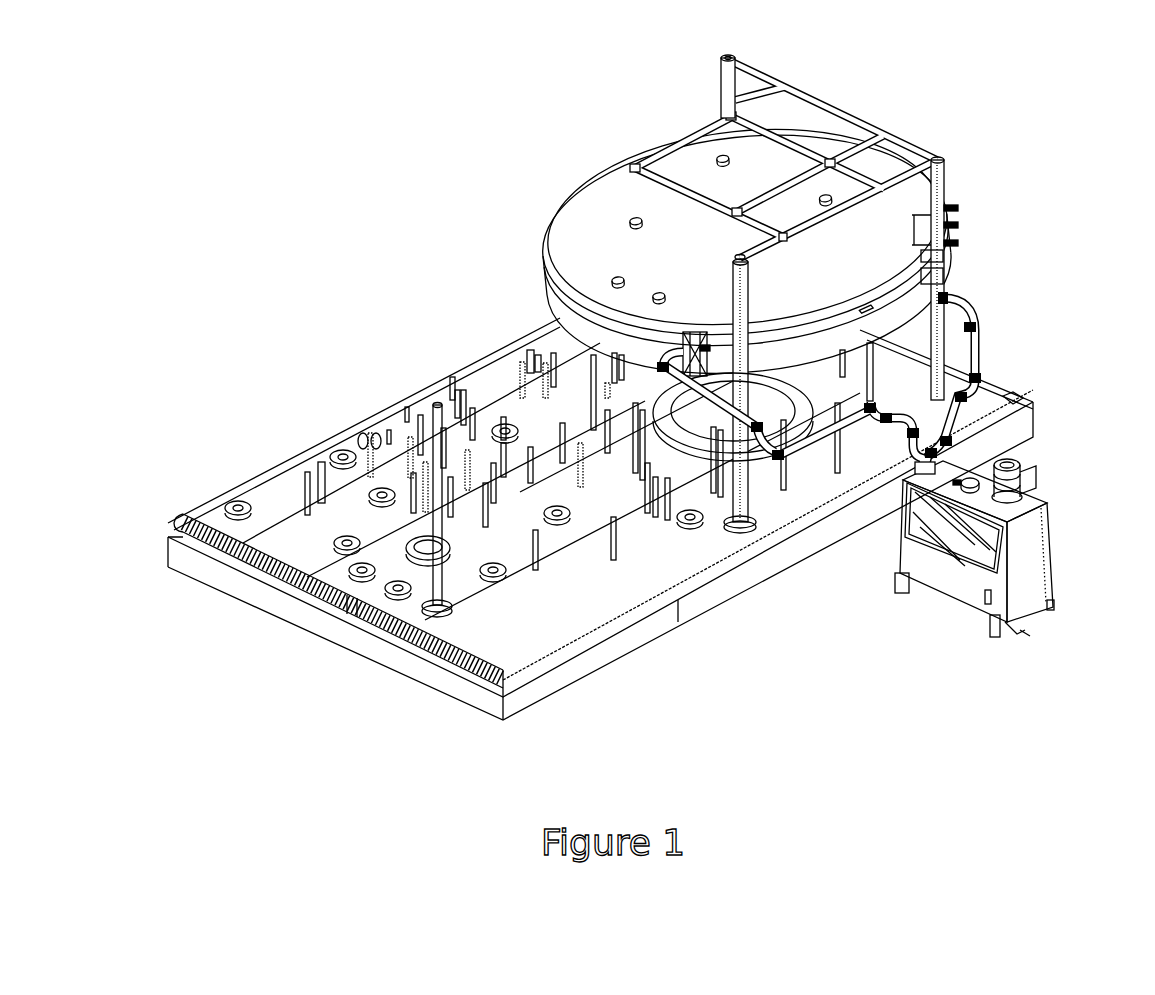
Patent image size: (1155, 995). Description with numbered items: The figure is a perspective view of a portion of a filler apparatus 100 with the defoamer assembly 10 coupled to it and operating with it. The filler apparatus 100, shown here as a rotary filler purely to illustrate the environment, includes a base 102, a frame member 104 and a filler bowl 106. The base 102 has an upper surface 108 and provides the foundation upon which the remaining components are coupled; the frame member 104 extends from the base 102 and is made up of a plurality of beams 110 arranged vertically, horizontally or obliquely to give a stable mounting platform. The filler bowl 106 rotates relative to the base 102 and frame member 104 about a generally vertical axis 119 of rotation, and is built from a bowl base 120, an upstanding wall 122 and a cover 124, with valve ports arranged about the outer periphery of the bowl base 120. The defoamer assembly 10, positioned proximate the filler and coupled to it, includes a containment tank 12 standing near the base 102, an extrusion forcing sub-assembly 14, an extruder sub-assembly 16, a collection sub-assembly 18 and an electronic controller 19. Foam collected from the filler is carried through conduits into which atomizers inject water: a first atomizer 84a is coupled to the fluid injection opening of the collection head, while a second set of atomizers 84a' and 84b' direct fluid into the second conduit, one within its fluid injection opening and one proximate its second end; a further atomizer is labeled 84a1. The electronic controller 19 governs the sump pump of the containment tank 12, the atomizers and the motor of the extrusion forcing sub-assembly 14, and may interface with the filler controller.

The defoamer assembly 10 is at (1058, 459).
The containment tank 12 is at (1060, 537).
The extrusion forcing sub-assembly 14 is at (1017, 456).
The extruder sub-assembly 16 is at (925, 533).
The collection sub-assembly 18 is at (988, 350).
The electronic controller 19 is at (1050, 512).
The atomizer 84a is at (690, 328).
The atomizer 84a' is at (901, 244).
The atomizer 84b' is at (1046, 409).
The pipe fitting 84a1 is at (912, 474).
The filler apparatus 100 is at (948, 128).
The base 102 is at (377, 407).
The frame member 104 is at (952, 172).
The filler bowl 106 is at (600, 160).
The upper surface 108 is at (607, 625).
The beams 110 is at (802, 88).
The axis of rotation 119 is at (745, 38).
The base of filler bowl 120 is at (556, 308).
The upstanding wall 122 is at (556, 280).
The cover 124 is at (558, 217).